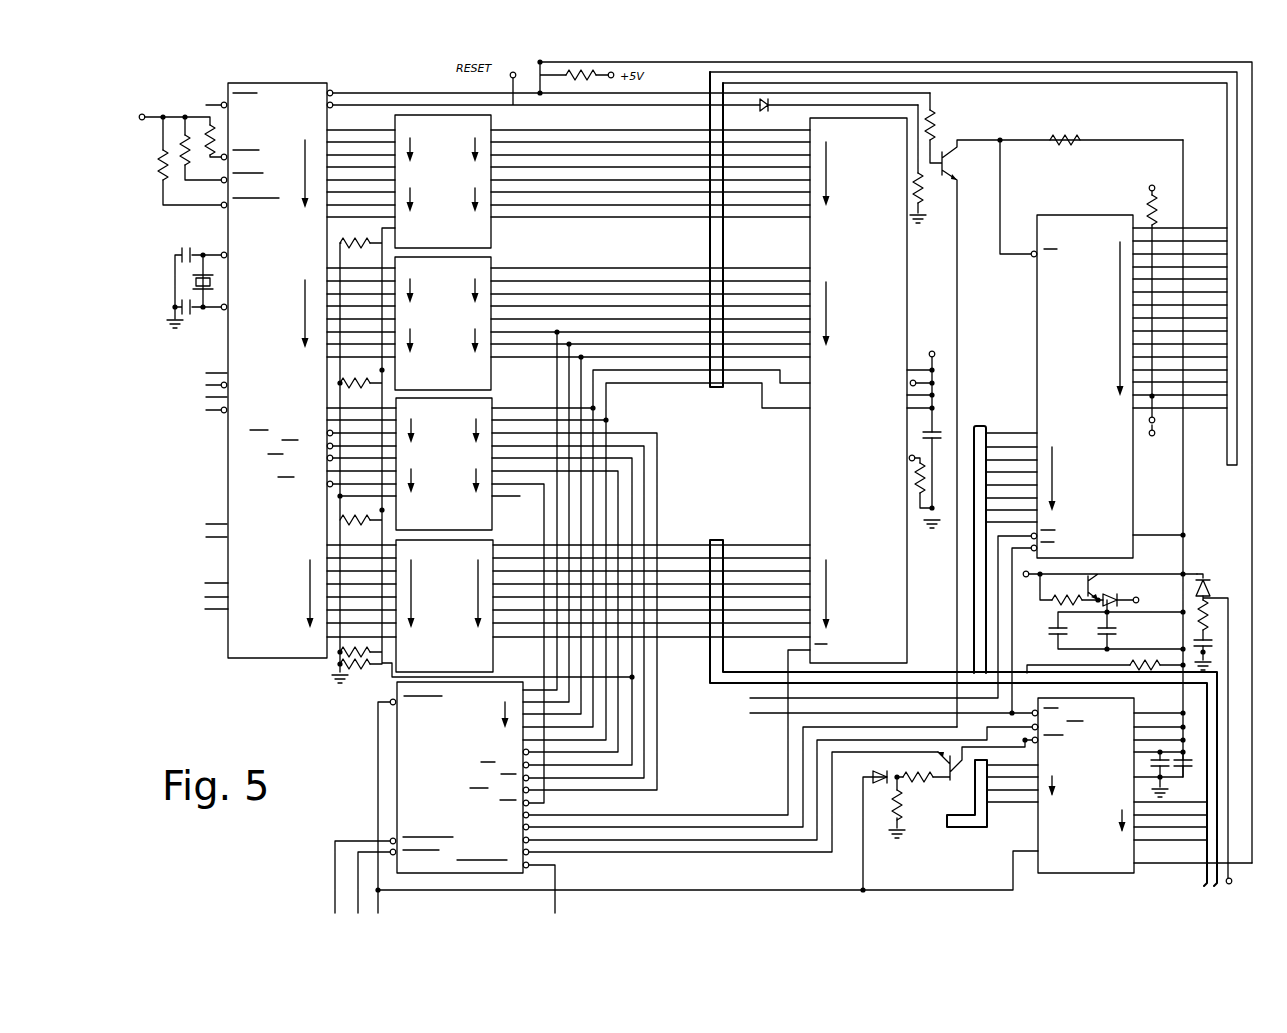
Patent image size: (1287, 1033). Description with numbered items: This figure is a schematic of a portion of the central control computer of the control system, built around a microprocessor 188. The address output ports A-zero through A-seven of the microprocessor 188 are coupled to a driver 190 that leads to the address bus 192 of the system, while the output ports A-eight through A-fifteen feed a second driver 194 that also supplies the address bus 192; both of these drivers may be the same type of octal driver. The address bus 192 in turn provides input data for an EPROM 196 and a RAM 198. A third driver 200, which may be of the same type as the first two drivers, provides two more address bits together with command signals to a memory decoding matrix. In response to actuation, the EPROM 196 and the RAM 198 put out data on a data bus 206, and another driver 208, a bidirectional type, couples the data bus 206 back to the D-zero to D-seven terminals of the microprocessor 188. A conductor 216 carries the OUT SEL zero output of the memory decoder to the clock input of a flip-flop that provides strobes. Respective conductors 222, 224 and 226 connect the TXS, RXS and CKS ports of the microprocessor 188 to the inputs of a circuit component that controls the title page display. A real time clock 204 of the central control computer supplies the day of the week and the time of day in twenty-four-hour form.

The microprocessor 188 is at (262, 660).
The driver 190 is at (486, 236).
The address bus 192 is at (708, 250).
The second driver 194 is at (490, 380).
The EPROM 196 is at (900, 250).
The RAM 198 is at (1077, 215).
The third driver 200 is at (486, 512).
The real time clock 204 is at (1035, 828).
The data bus 206 is at (981, 426).
The driver 208 is at (484, 655).
The conductor 216 is at (557, 878).
The conductor 222 is at (214, 582).
The conductor 224 is at (206, 596).
The conductor 226 is at (213, 613).